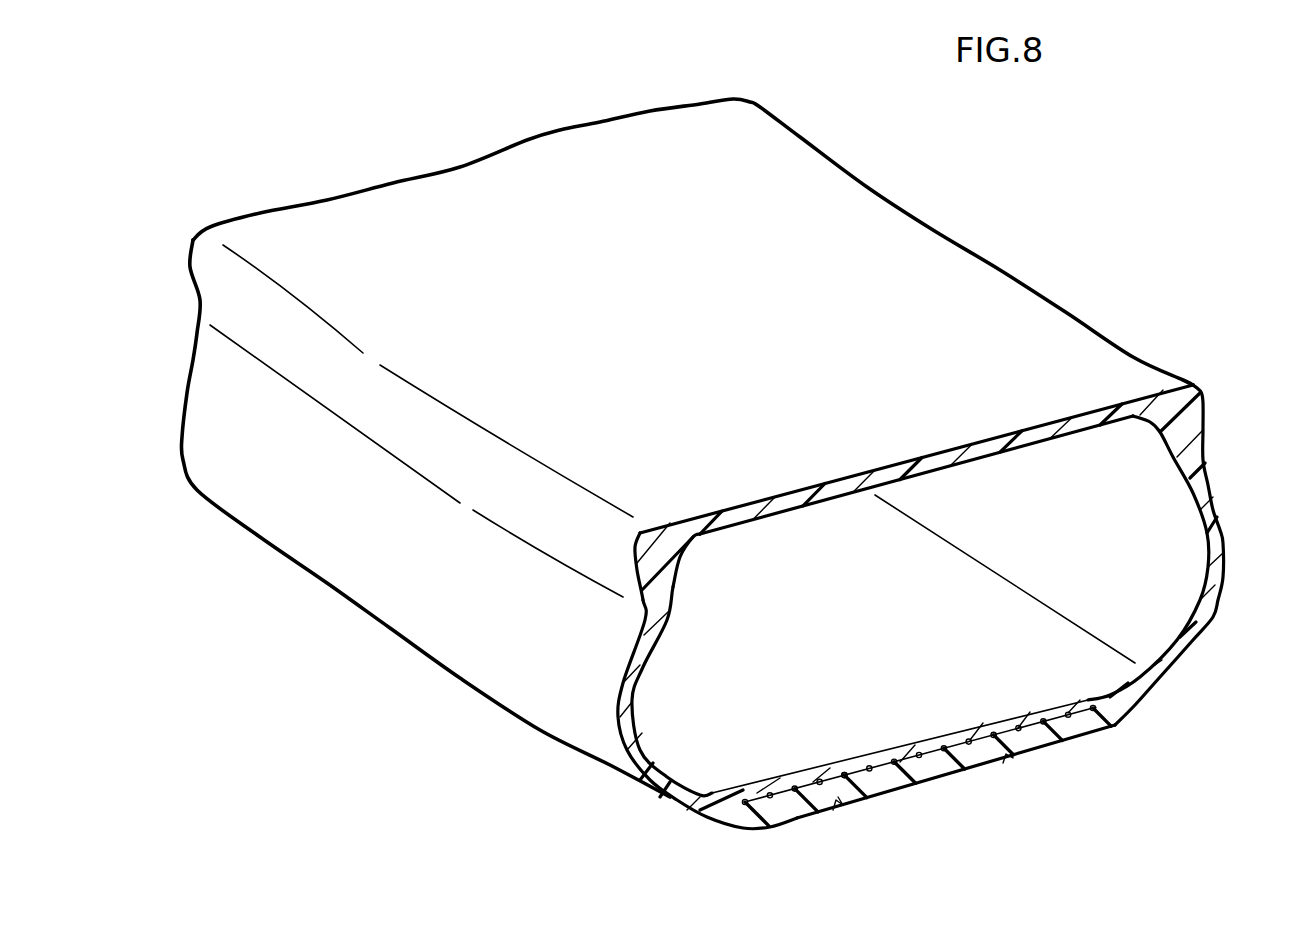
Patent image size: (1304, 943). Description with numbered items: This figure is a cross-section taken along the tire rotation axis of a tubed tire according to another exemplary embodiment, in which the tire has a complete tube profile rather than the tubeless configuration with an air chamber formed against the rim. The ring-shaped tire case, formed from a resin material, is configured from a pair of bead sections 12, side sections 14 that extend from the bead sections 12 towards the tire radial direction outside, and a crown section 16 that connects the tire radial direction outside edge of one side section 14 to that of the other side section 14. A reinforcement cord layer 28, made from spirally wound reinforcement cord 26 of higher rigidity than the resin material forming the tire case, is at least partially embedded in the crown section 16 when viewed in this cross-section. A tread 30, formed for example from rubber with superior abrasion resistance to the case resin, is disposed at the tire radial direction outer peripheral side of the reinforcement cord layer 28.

The bead section 12 is at (632, 547).
The side section 14 is at (622, 687).
The crown section 16 is at (1007, 713).
The reinforcement cord 26 is at (745, 799).
The reinforcement cord layer 28 is at (846, 772).
The tread 30 is at (890, 794).